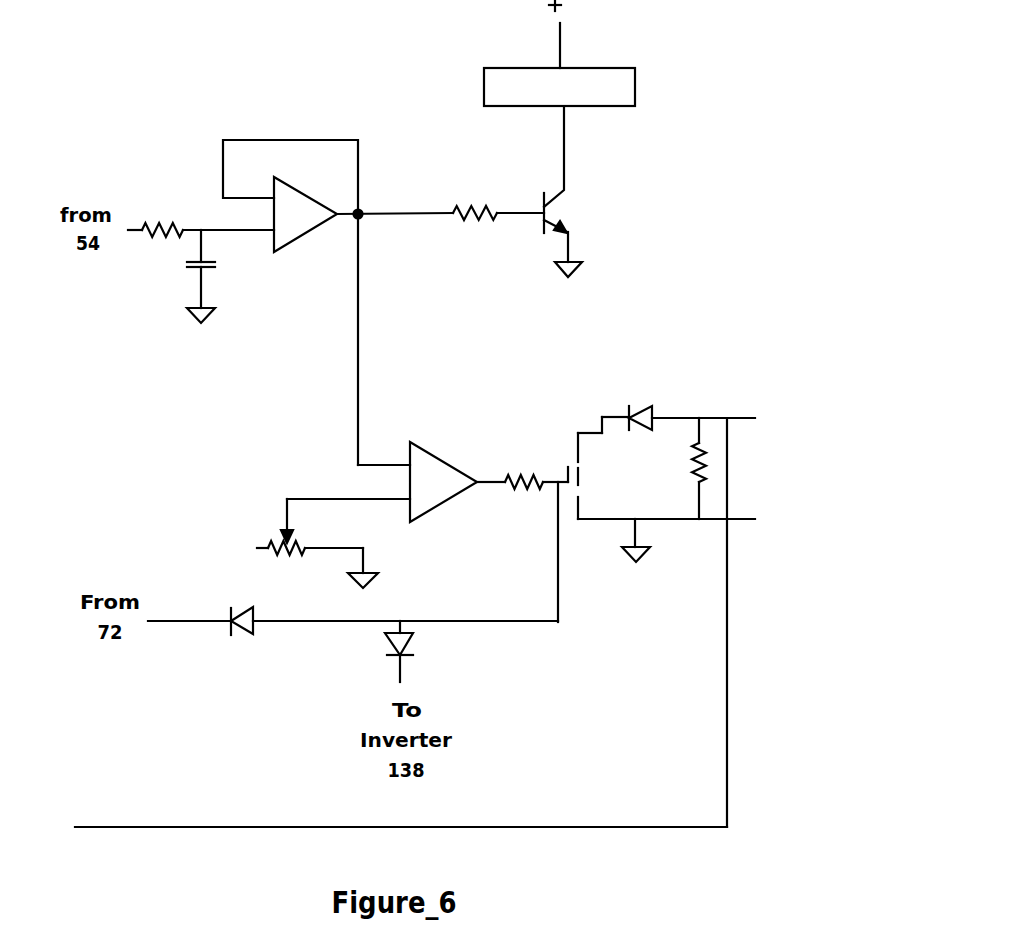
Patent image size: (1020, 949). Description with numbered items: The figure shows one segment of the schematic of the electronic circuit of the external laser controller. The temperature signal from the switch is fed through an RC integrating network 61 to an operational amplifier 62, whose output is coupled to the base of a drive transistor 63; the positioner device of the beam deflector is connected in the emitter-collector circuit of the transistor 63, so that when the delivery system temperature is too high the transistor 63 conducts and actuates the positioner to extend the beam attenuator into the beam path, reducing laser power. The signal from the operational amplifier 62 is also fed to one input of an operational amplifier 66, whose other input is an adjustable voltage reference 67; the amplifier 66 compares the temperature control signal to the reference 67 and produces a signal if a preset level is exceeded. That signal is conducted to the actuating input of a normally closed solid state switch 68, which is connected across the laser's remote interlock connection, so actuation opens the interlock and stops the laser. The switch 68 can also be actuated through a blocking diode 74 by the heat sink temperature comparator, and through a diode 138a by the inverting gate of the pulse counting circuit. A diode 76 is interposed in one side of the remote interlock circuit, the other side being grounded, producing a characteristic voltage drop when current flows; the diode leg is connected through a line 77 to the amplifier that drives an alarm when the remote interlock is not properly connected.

The RC integrating network 61 is at (173, 253).
The operational amplifier 62 is at (288, 243).
The drive transistor 63 is at (553, 232).
The operational amplifier 66 is at (429, 450).
The adjustable voltage reference 67 is at (280, 515).
The solid state switch 68 is at (560, 455).
The diode 76 is at (652, 410).
The line 77 is at (727, 720).
The blocking diode 74 is at (247, 630).
The diode 138a is at (408, 643).